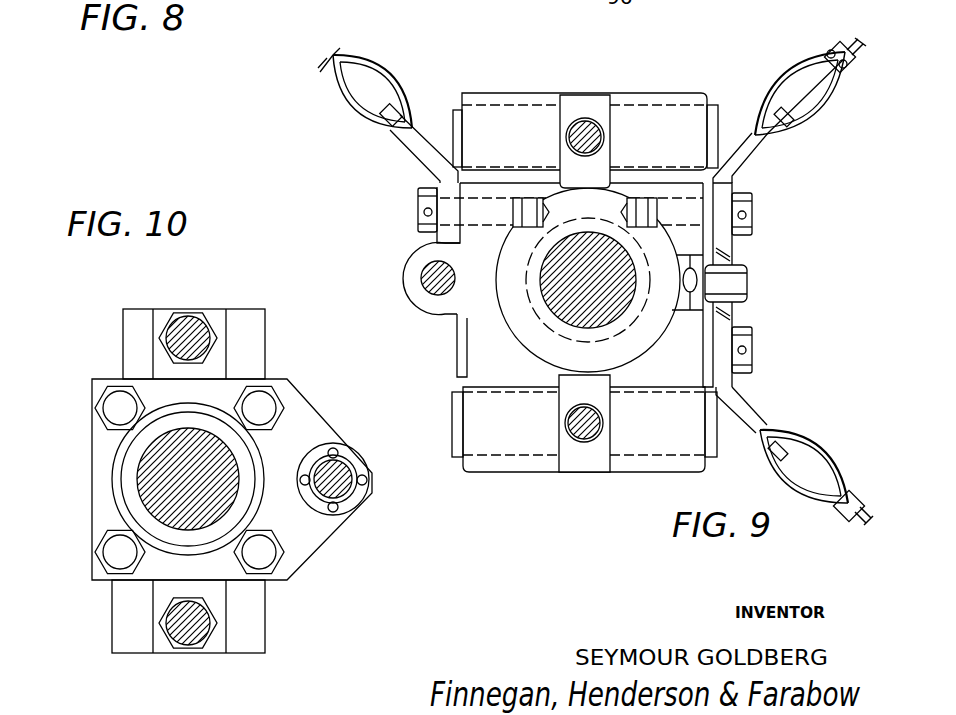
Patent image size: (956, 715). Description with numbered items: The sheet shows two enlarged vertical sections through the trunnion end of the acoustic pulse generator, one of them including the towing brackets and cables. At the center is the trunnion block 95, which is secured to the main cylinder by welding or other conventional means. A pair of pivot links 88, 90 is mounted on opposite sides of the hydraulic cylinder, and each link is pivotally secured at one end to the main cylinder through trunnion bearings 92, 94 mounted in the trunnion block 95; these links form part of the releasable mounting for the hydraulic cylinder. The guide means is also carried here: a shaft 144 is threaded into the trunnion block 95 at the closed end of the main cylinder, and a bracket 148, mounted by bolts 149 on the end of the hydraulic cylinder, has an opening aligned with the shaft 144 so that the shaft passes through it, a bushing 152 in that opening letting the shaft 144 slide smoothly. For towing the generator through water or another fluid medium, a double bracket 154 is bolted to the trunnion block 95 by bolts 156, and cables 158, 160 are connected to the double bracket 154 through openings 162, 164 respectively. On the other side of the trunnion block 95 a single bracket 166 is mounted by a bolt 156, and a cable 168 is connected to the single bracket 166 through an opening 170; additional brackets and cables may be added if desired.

In FIG. 10, the pivot link 88 is at (195, 648).
In FIG. 9, the pivot link 88 is at (588, 432).
In FIG. 10, the pivot link 90 is at (197, 330).
In FIG. 9, the pivot link 90 is at (587, 120).
In FIG. 9, the trunnion bearing 92 is at (453, 442).
In FIG. 9, the trunnion bearing 94 is at (718, 114).
In FIG. 9, the trunnion block 95 is at (485, 352).
In FIG. 10, the shaft 144 is at (343, 468).
In FIG. 9, the shaft 144 is at (420, 278).
In FIG. 10, the bracket 148 is at (305, 550).
In FIG. 10, the bolts 149 is at (267, 405).
In FIG. 10, the bushing 152 is at (350, 505).
In FIG. 9, the double bracket 154 is at (735, 320).
In FIG. 9, the bolts 156 is at (418, 212).
In FIG. 9, the cable 158 is at (830, 100).
In FIG. 9, the cable 160 is at (807, 432).
In FIG. 9, the opening 162 is at (770, 155).
In FIG. 9, the opening 164 is at (787, 407).
In FIG. 9, the single bracket 166 is at (432, 155).
In FIG. 9, the cable 168 is at (382, 73).
In FIG. 9, the opening 170 is at (417, 130).